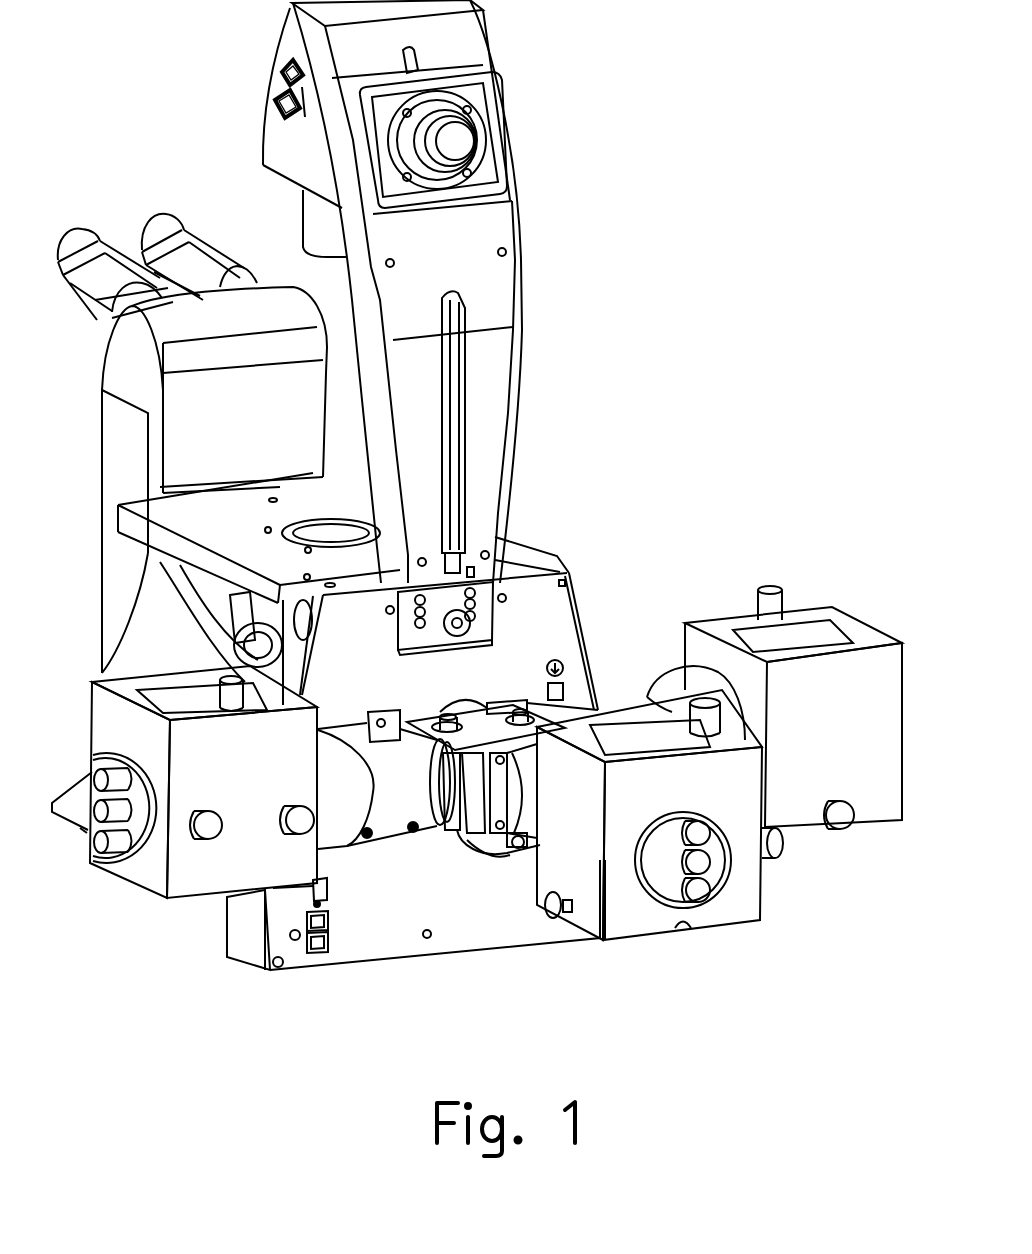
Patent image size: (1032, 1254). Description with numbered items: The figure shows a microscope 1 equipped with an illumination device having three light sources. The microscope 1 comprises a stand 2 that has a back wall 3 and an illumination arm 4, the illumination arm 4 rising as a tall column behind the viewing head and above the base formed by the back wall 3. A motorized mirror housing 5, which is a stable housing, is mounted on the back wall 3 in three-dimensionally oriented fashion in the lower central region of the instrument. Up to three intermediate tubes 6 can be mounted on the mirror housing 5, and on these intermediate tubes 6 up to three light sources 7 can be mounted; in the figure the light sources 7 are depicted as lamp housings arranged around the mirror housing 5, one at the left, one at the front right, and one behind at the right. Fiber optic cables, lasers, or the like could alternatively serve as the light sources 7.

The microscope 1 is at (472, 532).
The stand 2 is at (158, 615).
The back wall 3 is at (550, 640).
The illumination arm 4 is at (482, 227).
The motorized mirror housing 5 is at (475, 790).
The intermediate tubes 6 is at (391, 793).
The light sources 7 is at (190, 873).